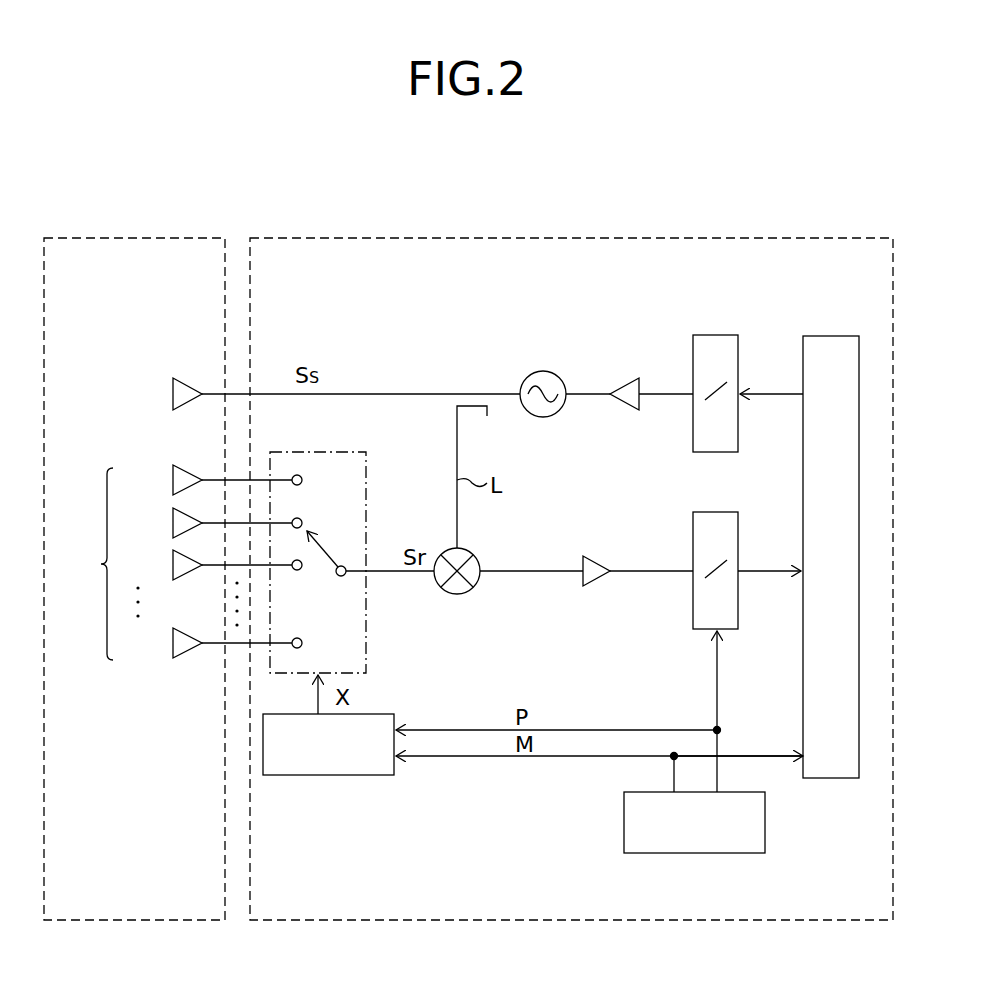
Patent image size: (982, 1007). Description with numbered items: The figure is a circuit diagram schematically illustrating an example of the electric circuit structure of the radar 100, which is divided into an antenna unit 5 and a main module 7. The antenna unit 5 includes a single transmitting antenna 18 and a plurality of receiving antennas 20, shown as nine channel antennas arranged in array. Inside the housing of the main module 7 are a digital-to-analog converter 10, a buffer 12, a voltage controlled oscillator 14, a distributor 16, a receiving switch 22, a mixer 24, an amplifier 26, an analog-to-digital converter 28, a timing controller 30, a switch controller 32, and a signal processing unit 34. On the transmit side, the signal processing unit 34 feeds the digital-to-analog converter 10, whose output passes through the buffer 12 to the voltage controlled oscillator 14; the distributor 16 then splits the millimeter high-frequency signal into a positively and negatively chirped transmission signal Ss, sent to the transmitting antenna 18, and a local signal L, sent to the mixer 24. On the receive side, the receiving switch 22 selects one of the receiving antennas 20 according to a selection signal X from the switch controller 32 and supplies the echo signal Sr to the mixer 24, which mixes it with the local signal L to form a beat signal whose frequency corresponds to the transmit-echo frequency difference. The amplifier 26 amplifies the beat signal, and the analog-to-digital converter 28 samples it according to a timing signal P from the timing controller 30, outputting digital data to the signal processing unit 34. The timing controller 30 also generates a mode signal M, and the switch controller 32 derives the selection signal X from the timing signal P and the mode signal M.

The antenna unit 5 is at (145, 238).
The main module 7 is at (568, 238).
The radar 100 is at (342, 217).
The digital-to-analog (D/A) converter 10 is at (713, 335).
The buffer 12 is at (626, 378).
The voltage controlled oscillator (VCO) 14 is at (543, 371).
The distributor 16 is at (455, 399).
The transmitting antenna 18 is at (192, 377).
The receiving antennas 20 is at (154, 562).
The receiving switch 22 is at (326, 452).
The mixer 24 is at (455, 594).
The amplifier 26 is at (597, 586).
The analog-to-digital (A/D) converter 28 is at (713, 512).
The timing controller 30 is at (700, 853).
The switch controller 32 is at (332, 775).
The signal processing unit 34 is at (829, 336).